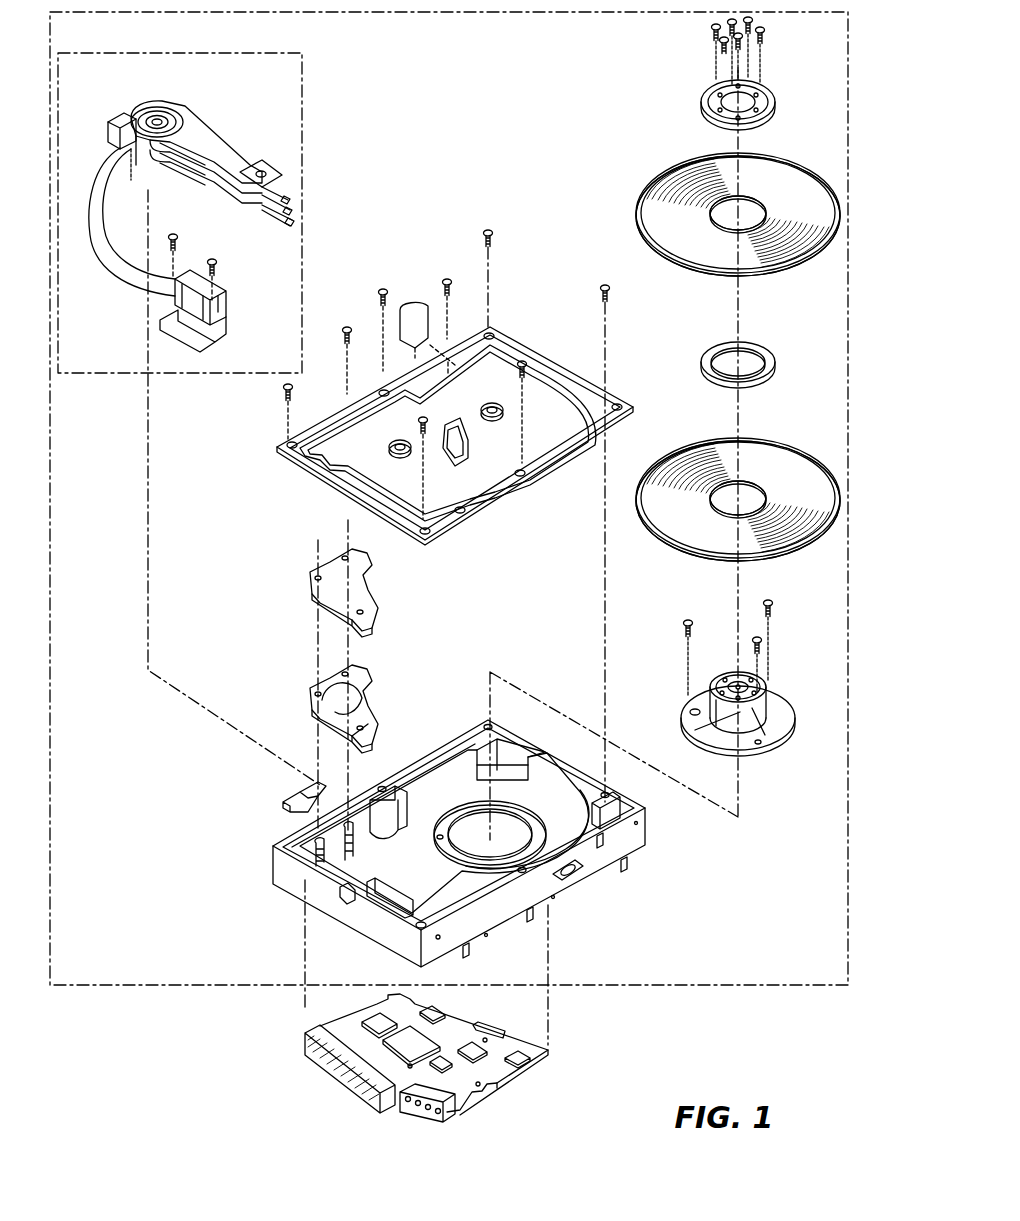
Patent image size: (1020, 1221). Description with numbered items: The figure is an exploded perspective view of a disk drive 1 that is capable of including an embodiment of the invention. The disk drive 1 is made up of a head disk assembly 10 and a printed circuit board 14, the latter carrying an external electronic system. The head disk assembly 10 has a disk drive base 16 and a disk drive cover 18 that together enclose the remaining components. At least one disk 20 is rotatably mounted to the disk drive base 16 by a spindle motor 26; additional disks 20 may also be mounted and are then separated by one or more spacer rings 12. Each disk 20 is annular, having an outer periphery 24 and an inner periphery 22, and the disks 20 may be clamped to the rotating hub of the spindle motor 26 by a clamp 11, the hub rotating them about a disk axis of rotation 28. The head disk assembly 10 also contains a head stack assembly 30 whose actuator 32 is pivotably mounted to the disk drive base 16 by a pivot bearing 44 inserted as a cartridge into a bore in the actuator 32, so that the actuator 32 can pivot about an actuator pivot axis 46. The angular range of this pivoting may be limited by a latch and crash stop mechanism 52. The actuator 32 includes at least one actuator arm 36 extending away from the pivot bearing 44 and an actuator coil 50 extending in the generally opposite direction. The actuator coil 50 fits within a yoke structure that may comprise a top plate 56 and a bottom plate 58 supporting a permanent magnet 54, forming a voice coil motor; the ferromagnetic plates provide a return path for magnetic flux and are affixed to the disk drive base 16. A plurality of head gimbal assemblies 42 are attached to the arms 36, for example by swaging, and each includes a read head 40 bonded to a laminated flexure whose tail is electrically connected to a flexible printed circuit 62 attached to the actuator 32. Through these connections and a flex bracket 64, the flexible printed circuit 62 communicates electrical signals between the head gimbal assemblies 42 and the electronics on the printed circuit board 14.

The disk drive 1 is at (740, 1015).
The head disk assembly 10 is at (650, 988).
The clamp 11 is at (765, 82).
The spacer ring 12 is at (702, 365).
The printed circuit board 14 is at (530, 1075).
The disk drive base 16 is at (590, 880).
The disk drive cover 18 is at (496, 326).
The disk 20 is at (790, 162).
The inner periphery 22 is at (766, 206).
The outer periphery 24 is at (682, 265).
The spindle motor 26 is at (772, 742).
The disk axis of rotation 28 is at (745, 295).
The head stack assembly 30 is at (92, 376).
The actuator 32 is at (152, 108).
The actuator arm 36 is at (194, 131).
The read head 40 is at (284, 226).
The head gimbal assembly 42 is at (264, 186).
The pivot bearing 44 is at (168, 110).
The actuator pivot axis 46 is at (148, 568).
The actuator coil 50 is at (120, 126).
The latch and crash stop mechanism 52 is at (284, 805).
The permanent magnet 54 is at (332, 715).
The top plate 56 is at (328, 598).
The bottom plate 58 is at (372, 722).
The flexible printed circuit 62 is at (122, 284).
The flex bracket 64 is at (218, 338).